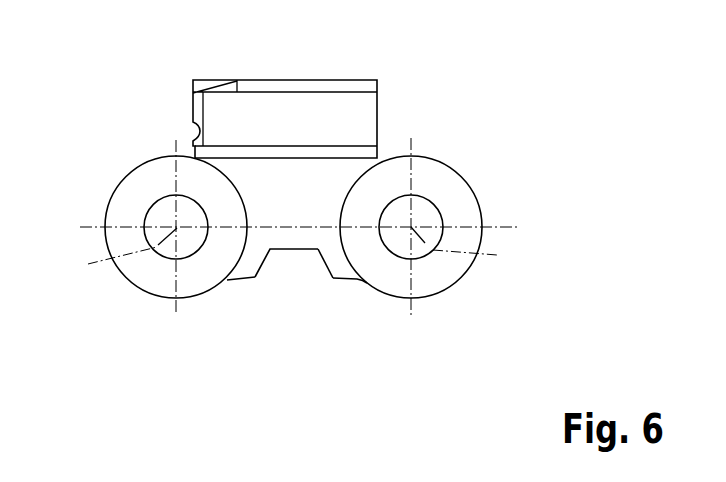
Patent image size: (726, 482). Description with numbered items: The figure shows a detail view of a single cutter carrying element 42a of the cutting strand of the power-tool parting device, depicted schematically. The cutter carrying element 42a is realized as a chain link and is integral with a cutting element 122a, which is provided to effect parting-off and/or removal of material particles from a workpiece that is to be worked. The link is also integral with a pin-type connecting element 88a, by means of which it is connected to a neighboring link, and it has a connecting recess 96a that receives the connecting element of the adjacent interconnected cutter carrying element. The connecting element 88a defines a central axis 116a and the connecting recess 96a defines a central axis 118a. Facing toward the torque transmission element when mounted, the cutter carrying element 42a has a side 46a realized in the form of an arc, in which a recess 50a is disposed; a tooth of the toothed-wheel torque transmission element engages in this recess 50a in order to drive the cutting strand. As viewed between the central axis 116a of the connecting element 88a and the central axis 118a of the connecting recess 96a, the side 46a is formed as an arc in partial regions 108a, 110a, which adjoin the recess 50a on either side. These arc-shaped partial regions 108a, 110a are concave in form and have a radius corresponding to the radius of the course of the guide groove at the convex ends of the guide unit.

The cutting element 122a is at (324, 88).
The cutter carrying element 42a is at (432, 158).
The connecting recess 96a is at (435, 203).
The central axis of the connecting recess 118a is at (497, 255).
The central axis of the connecting element 116a is at (88, 264).
The connecting element 88a is at (172, 249).
The arc-shaped partial region 108a is at (233, 300).
The side facing the torque transmission element 46a is at (295, 300).
The recess 50a is at (321, 262).
The arc-shaped partial region 110a is at (366, 304).